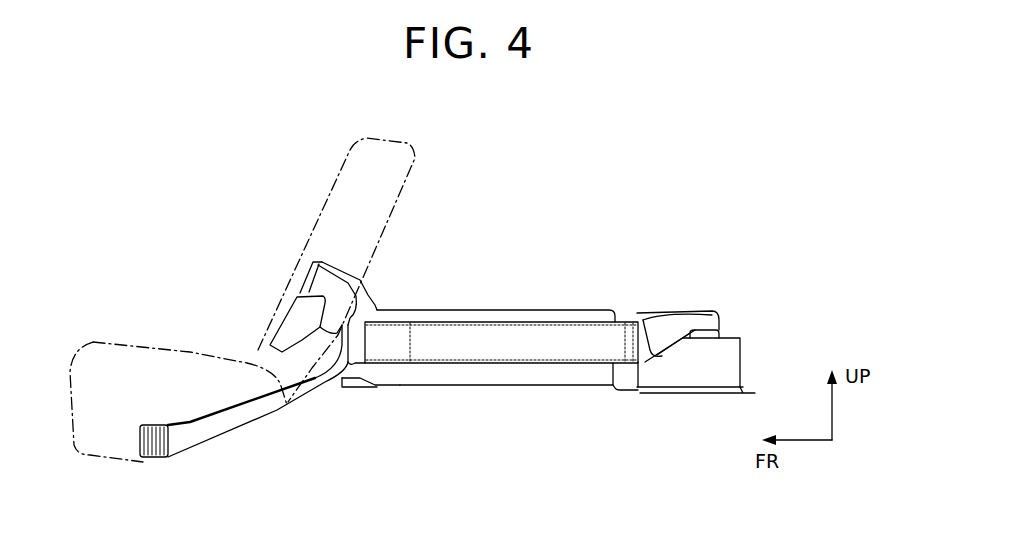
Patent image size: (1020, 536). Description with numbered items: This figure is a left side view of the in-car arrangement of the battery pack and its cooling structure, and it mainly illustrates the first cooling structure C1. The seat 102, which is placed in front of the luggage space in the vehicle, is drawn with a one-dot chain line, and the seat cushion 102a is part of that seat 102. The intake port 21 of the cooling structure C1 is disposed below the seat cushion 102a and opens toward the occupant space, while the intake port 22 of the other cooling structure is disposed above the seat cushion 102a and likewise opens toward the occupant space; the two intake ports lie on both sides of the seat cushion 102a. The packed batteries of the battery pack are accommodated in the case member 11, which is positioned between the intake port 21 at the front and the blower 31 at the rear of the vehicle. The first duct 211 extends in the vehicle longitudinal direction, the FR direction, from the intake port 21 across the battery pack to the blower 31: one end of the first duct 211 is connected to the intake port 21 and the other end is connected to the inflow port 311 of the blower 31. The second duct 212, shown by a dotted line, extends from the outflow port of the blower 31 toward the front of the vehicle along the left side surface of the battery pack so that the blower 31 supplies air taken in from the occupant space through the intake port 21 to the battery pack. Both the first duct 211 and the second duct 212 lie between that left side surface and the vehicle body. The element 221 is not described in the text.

The seat 102 is at (314, 207).
The seat cushion 102a is at (156, 343).
The intake port 22 is at (281, 308).
The upper portion of bracket 221 is at (365, 302).
The case member 11 is at (516, 300).
The first cooling structure C1 is at (665, 300).
The inflow port 311 is at (719, 332).
The blower 31 is at (756, 360).
The first duct 211 is at (402, 365).
The second duct 212 is at (477, 365).
The intake port 21 is at (137, 445).